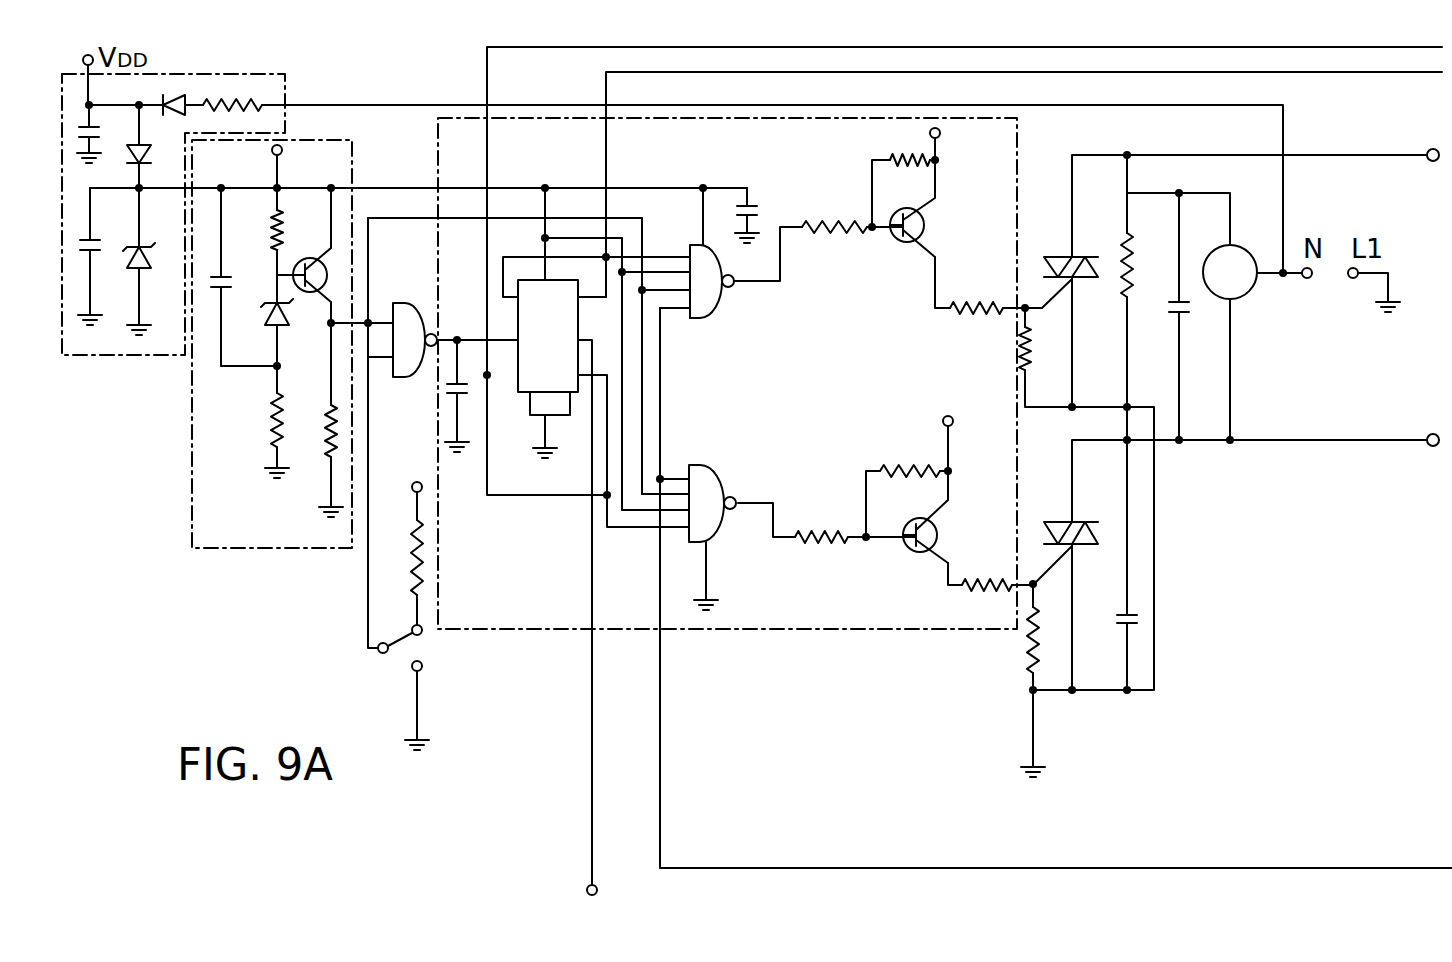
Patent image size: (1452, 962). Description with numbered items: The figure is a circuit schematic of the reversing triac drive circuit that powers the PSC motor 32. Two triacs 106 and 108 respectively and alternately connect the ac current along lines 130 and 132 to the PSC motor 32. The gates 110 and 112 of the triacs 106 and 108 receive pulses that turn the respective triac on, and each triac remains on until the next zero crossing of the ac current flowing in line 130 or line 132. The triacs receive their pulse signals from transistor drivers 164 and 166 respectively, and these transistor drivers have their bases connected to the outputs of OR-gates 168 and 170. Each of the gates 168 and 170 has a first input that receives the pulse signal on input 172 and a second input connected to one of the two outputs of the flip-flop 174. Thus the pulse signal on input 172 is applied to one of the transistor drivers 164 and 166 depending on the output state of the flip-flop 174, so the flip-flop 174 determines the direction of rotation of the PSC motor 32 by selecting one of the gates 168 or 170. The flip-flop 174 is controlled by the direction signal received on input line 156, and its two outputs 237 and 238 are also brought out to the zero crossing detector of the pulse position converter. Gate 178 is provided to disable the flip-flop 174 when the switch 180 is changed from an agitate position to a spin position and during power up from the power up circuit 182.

The PSC motor 32 is at (1252, 257).
The triac 106 is at (1062, 257).
The triac 108 is at (1062, 521).
The gate 110 is at (1062, 310).
The gate 112 is at (1047, 572).
The line 130 is at (1108, 143).
The line 132 is at (1290, 445).
The input line 156 is at (592, 812).
The transistor driver 164 is at (503, 630).
The transistor driver 166 is at (938, 540).
The OR-gate 168 is at (723, 297).
The OR-gate 170 is at (715, 465).
The input 172 is at (662, 826).
The flip-flop 174 is at (551, 348).
The gate 178 is at (397, 303).
The switch 180 is at (403, 666).
The power up circuit 182 is at (345, 141).
The output 237 is at (1303, 72).
The output 238 is at (1320, 47).